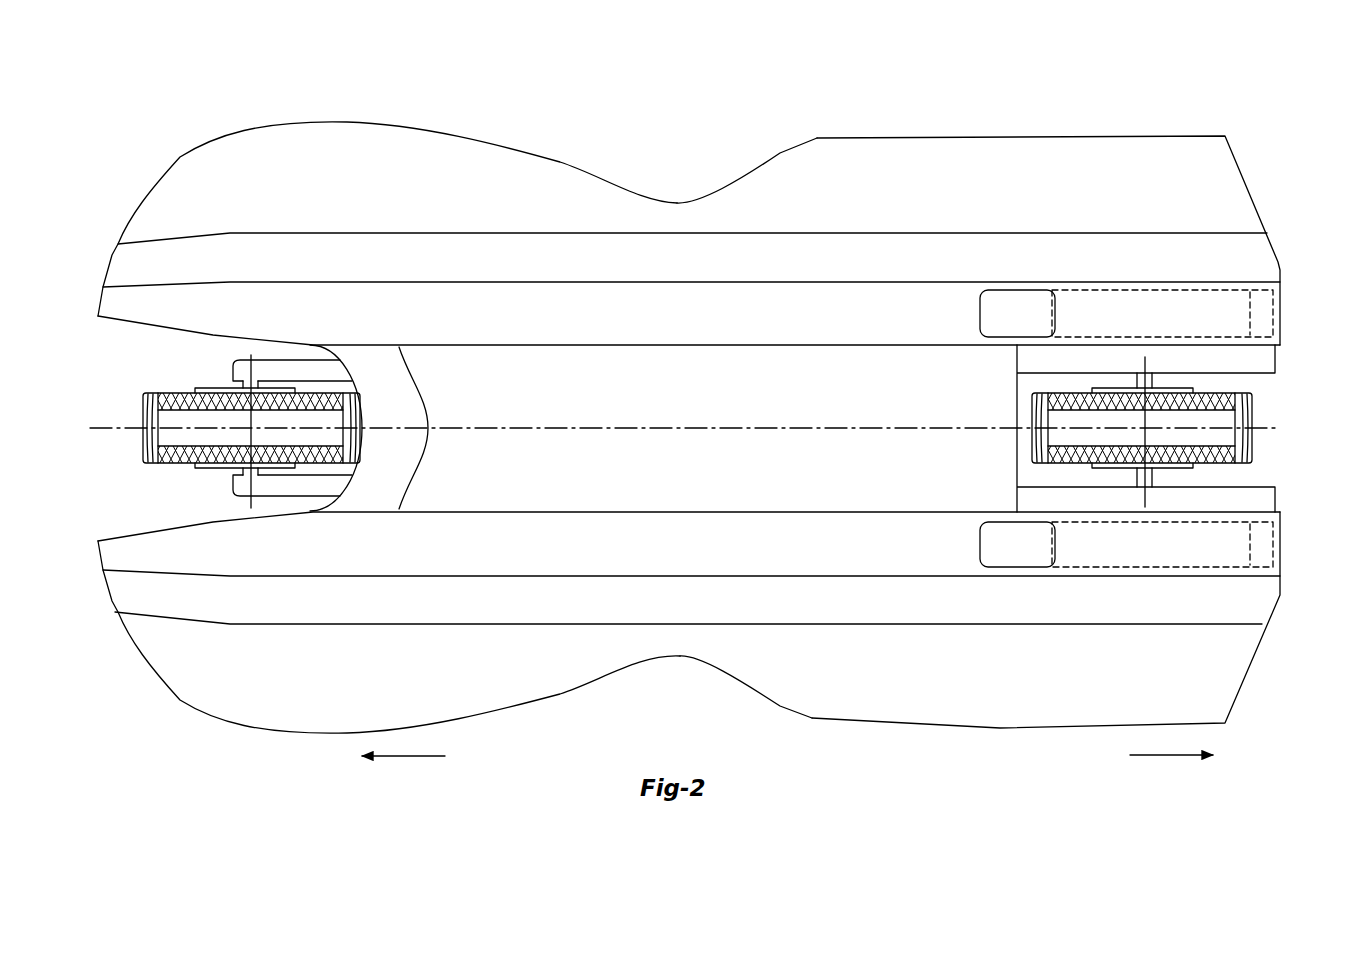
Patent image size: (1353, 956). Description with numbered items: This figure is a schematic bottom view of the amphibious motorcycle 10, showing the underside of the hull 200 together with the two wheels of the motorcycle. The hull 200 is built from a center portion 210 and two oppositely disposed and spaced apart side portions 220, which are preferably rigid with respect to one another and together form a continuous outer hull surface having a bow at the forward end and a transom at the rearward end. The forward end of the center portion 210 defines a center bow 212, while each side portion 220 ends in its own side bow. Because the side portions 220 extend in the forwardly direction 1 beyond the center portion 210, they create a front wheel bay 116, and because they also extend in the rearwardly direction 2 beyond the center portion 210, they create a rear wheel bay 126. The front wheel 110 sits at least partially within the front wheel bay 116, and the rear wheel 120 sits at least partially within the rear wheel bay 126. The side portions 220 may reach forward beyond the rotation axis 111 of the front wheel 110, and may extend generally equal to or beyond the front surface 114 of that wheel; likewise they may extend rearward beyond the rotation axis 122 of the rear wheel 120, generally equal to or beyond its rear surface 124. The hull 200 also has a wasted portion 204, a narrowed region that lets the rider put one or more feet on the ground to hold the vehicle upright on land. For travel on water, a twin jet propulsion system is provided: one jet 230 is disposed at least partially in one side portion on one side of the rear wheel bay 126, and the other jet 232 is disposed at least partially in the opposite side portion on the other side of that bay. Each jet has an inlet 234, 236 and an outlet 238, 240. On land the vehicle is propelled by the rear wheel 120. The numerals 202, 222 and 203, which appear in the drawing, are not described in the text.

The amphibious motorcycle 10 is at (626, 130).
The hull 200 is at (1068, 128).
The housing end portion 202 is at (917, 135).
The wasted portion 204 is at (734, 130).
The side portions 220 is at (839, 330).
The housing curved end 222 is at (122, 263).
The center bow 212 is at (367, 360).
The center portion 210 is at (709, 478).
The longitudinal axis 203 is at (858, 427).
The jet 230 is at (1213, 290).
The jet 232 is at (1137, 568).
The inlet 234 is at (1003, 300).
The inlet 236 is at (1010, 550).
The outlet 238 is at (1265, 314).
The outlet 240 is at (1263, 540).
The front wheel 110 is at (137, 437).
The rotation axis 111 is at (262, 493).
The front surface 114 is at (134, 416).
The front wheel bay 116 is at (117, 361).
The rear wheel 120 is at (1260, 402).
The rotation axis 122 is at (1143, 505).
The rear surface 124 is at (1255, 447).
The rear wheel bay 126 is at (1264, 479).
The forwardly direction 1 is at (403, 770).
The rearwardly direction 2 is at (1171, 773).